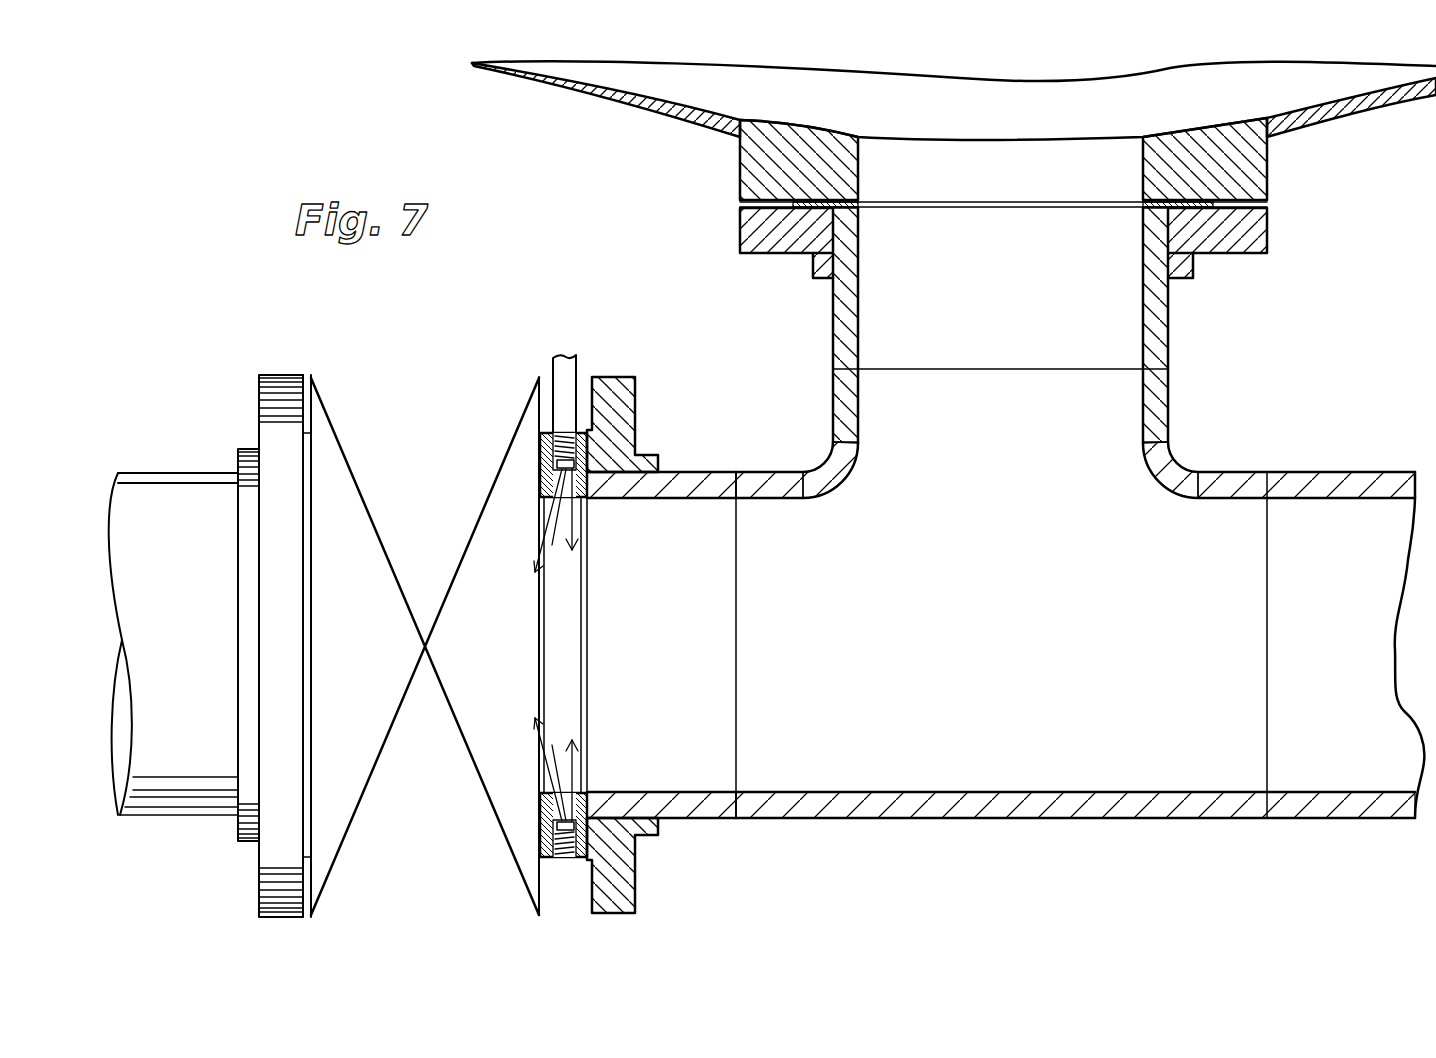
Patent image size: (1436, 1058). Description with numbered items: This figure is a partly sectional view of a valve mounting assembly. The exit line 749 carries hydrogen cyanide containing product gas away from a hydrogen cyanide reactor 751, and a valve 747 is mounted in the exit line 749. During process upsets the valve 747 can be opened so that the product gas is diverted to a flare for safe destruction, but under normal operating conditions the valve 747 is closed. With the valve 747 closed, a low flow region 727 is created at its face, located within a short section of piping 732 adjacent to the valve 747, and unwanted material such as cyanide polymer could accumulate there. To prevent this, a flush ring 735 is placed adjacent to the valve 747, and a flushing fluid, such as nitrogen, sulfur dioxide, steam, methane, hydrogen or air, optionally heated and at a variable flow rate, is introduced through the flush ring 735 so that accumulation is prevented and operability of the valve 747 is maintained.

The low flow region 727 is at (708, 634).
The short section of piping 732 is at (690, 810).
The flush ring 735 is at (567, 858).
The valve 747 is at (447, 810).
The exit line 749 is at (1068, 810).
The hydrogen cyanide reactor 751 is at (1362, 108).